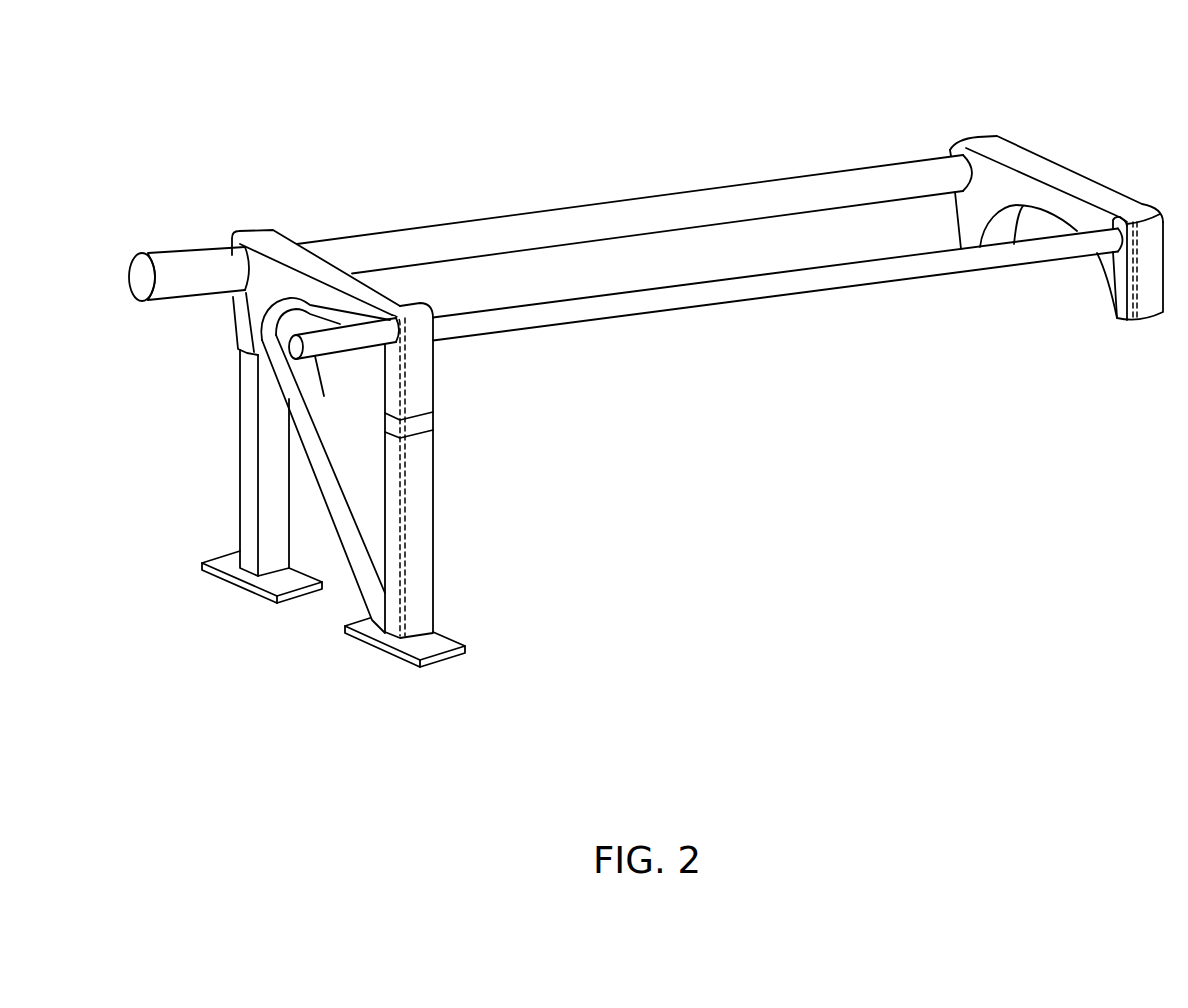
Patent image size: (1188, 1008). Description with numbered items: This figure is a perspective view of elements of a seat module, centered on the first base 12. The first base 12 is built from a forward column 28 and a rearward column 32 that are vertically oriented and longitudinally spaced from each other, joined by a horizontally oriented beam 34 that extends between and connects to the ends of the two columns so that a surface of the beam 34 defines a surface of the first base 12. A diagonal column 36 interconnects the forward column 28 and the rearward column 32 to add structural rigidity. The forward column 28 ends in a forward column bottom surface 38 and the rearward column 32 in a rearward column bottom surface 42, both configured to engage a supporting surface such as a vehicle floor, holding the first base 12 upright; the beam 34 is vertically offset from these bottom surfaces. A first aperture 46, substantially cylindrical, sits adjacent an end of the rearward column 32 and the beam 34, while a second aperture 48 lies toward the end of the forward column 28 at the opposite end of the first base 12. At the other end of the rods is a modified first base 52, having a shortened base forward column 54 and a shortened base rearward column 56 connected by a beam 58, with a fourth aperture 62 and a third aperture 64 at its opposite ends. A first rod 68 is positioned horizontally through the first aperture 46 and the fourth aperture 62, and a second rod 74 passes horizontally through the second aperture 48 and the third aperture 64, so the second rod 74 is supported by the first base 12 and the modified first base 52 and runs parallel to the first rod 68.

The first base 12 is at (237, 462).
The forward column 28 is at (436, 540).
The rearward column 32 is at (236, 513).
The beam 34 is at (350, 282).
The diagonal column 36 is at (363, 572).
The forward column bottom surface 38 is at (392, 651).
The rearward column bottom surface 42 is at (237, 588).
The first aperture 46 is at (233, 236).
The second aperture 48 is at (393, 311).
The modified first base 52 is at (1090, 182).
The shortened base forward column 54 is at (1118, 292).
The shortened base rearward column 56 is at (926, 247).
The beam 58 is at (1063, 188).
The fourth aperture 62 is at (951, 146).
The third aperture 64 is at (1112, 221).
The first rod 68 is at (608, 203).
The second rod 74 is at (728, 288).